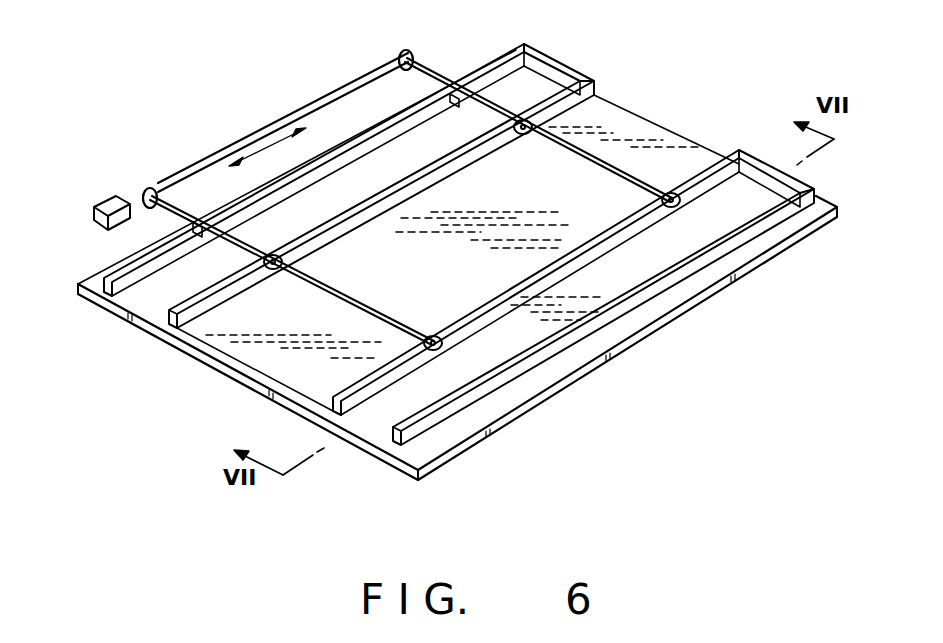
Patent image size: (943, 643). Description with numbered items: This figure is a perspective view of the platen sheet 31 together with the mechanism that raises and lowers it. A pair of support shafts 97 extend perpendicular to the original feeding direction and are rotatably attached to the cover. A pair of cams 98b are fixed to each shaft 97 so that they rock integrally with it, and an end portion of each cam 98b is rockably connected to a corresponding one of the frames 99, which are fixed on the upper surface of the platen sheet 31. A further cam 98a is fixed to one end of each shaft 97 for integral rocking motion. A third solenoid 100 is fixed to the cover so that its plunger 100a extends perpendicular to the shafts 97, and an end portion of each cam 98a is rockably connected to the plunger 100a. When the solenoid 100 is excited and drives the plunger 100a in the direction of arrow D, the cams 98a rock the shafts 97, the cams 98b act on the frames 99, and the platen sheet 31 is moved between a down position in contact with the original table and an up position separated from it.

The platen sheet 31 is at (656, 307).
The support shafts 97 is at (591, 164).
The cam 98a is at (145, 180).
The cams 98b is at (528, 116).
The frames 99 is at (185, 308).
The third solenoid 100 is at (102, 188).
The plunger 100a is at (273, 109).